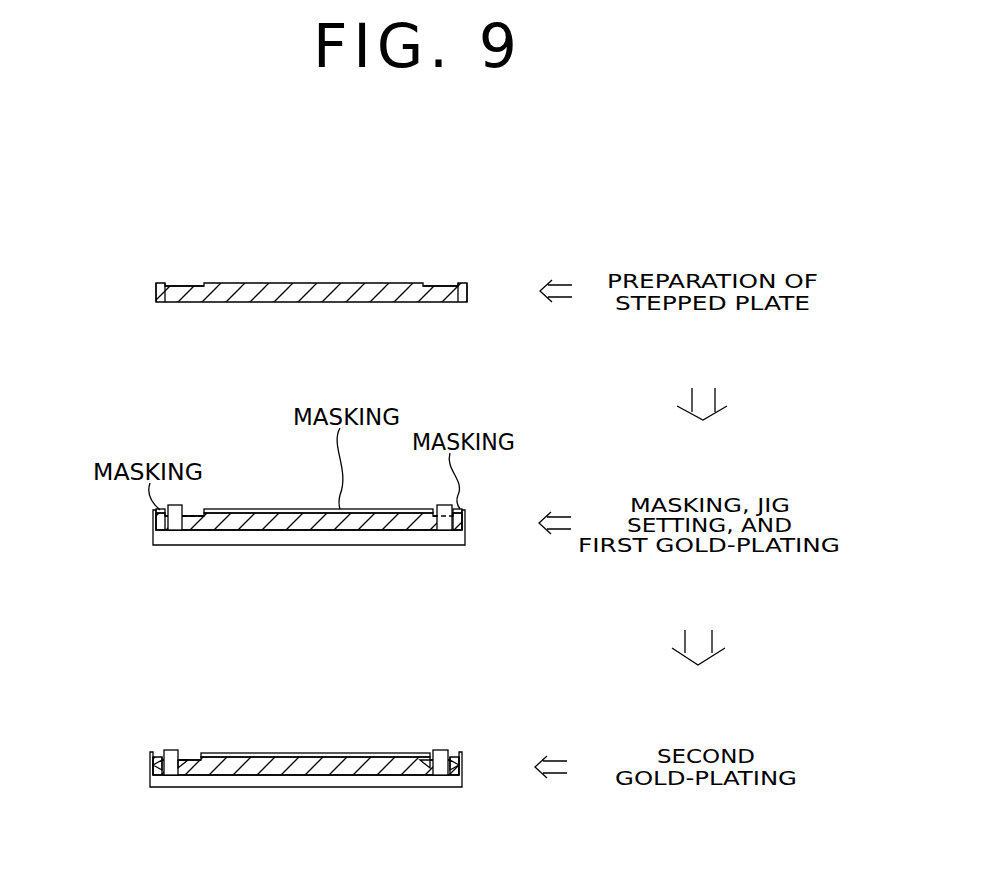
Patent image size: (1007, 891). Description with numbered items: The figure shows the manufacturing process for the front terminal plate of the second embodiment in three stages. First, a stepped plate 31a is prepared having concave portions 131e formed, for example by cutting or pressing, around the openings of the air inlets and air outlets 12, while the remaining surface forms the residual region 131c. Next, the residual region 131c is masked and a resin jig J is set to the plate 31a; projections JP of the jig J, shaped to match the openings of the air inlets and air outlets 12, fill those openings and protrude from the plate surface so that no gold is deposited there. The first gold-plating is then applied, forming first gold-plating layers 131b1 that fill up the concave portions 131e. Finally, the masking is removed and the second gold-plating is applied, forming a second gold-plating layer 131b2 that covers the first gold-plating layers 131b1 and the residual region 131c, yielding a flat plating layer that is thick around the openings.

The plate 31a is at (345, 302).
The residual region 131c is at (163, 283).
The concave portions 131e is at (203, 286).
The air inlets and air outlets 12 is at (177, 302).
The jig J is at (355, 545).
The projections JP is at (172, 530).
The first gold-plating layers 131b1 is at (200, 513).
The second gold-plating layer 131b2 is at (362, 753).